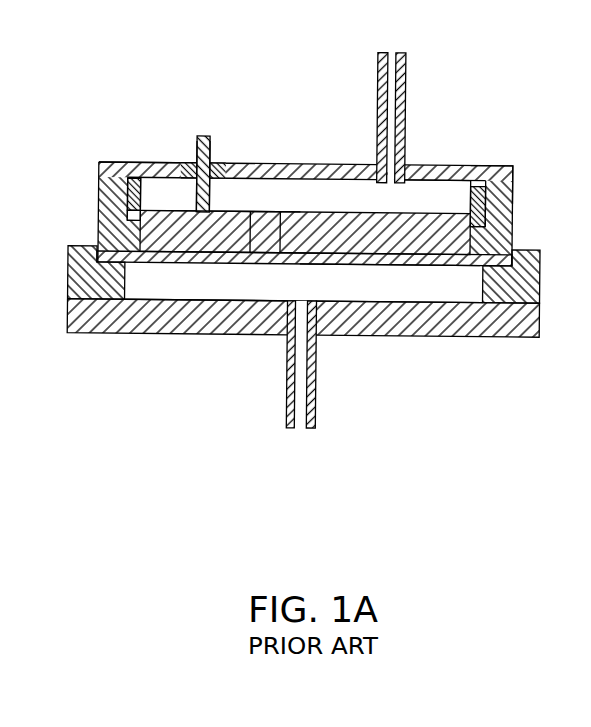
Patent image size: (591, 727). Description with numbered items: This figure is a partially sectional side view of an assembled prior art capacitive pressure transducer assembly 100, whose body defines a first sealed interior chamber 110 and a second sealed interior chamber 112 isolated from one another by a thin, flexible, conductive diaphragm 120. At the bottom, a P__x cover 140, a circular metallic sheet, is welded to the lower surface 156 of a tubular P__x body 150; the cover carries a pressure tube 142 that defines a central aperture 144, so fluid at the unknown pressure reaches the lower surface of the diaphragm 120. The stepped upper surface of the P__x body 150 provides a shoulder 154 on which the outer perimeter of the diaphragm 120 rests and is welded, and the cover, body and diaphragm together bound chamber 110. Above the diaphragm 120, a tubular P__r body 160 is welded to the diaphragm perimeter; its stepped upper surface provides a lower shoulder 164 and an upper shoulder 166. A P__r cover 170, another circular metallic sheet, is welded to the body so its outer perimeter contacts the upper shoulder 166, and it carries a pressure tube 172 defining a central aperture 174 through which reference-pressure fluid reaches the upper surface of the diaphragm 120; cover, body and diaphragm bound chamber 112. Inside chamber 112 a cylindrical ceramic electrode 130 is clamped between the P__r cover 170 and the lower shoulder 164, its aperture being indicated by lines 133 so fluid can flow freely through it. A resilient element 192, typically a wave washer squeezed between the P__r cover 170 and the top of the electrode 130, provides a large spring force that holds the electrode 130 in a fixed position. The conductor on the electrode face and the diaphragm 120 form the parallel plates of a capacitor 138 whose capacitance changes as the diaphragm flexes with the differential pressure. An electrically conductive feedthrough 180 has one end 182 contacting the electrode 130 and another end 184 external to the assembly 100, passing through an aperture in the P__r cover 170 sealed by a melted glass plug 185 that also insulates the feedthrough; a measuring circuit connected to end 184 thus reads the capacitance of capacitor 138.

The capacitive pressure transducer assembly 100 is at (191, 384).
The first sealed interior chamber 110 is at (195, 293).
The second sealed interior chamber 112 is at (257, 207).
The diaphragm 120 is at (272, 264).
The electrode 130 is at (311, 209).
The lines indicating aperture 133 is at (282, 218).
The capacitor 138 is at (390, 268).
The P__x cover 140 is at (421, 337).
The pressure tube 142 is at (317, 415).
The central aperture 144 is at (302, 426).
The P__x body 150 is at (540, 289).
The shoulder 154 is at (113, 250).
The lower surface 156 is at (92, 300).
The P__r body 160 is at (513, 228).
The lower shoulder 164 is at (513, 172).
The upper shoulder 166 is at (132, 162).
The P__r cover 170 is at (289, 161).
The pressure tube 172 is at (404, 106).
The central aperture 174 is at (426, 197).
The electrically conductive feedthrough 180 is at (196, 153).
The end of feedthrough 182 is at (196, 200).
The end of feedthrough 184 is at (208, 135).
The melted glass plug 185 is at (212, 163).
The resilient element 192 is at (123, 193).